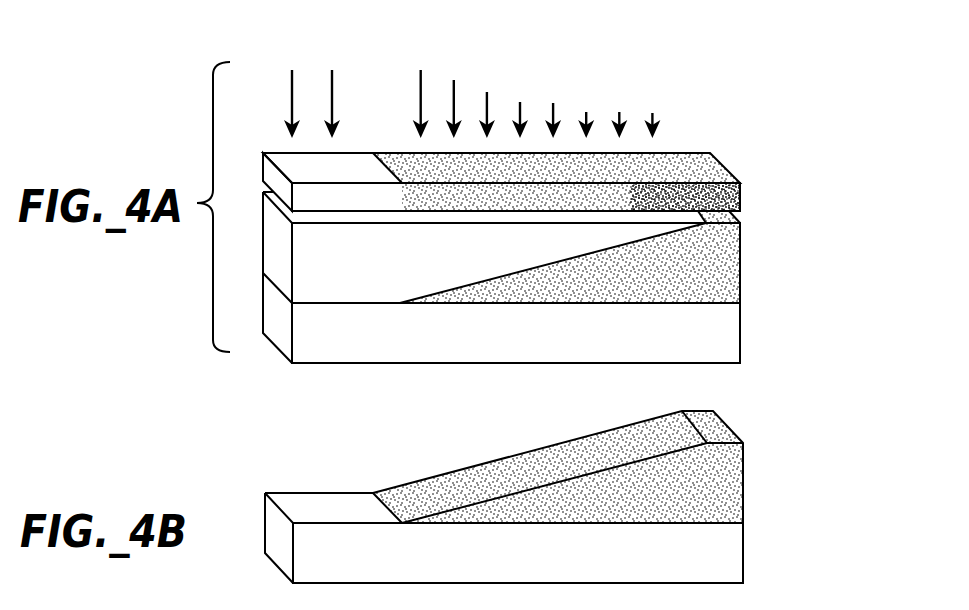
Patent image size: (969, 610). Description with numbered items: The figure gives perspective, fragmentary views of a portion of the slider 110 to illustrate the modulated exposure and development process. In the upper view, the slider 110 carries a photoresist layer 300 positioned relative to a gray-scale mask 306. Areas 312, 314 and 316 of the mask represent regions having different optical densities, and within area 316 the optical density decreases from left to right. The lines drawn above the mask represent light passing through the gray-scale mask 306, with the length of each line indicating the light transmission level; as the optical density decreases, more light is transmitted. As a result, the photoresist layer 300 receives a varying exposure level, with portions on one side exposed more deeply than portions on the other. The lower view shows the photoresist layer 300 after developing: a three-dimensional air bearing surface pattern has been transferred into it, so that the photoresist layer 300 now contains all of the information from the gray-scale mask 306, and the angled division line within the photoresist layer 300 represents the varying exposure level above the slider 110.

In FIG. 4A, the mask area 314 is at (383, 70).
In FIG. 4A, the mask area 316 is at (693, 68).
In FIG. 4A, the mask area 312 is at (725, 103).
In FIG. 4A, the gray-scale mask 306 is at (735, 172).
In FIG. 4A, the photoresist layer 300 is at (727, 270).
In FIG. 4B, the photoresist layer 300 is at (728, 492).
In FIG. 4A, the slider 110 is at (727, 342).
In FIG. 4B, the slider 110 is at (728, 563).